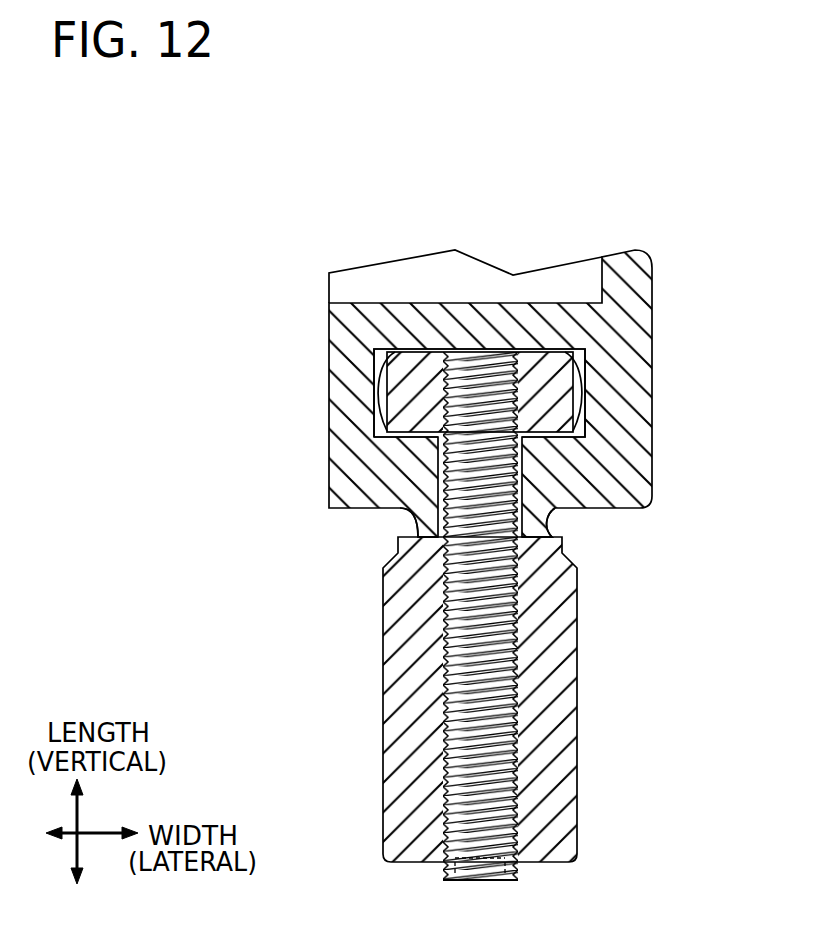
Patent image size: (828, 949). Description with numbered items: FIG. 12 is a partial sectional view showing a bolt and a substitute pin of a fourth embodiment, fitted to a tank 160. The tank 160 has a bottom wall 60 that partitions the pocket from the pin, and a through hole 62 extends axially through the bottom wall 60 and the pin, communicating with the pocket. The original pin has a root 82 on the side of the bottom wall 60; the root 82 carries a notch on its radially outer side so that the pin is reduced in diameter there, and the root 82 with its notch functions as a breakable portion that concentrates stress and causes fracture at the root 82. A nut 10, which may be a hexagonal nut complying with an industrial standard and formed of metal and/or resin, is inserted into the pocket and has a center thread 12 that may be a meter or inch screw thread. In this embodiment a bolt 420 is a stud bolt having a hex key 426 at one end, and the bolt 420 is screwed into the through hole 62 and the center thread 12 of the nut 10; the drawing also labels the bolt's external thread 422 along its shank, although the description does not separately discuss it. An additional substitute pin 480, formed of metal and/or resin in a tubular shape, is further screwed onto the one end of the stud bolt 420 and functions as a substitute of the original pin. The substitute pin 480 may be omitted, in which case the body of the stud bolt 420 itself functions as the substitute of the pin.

The tank 160 is at (686, 174).
The nut 10 is at (567, 337).
The center thread 12 is at (398, 410).
The bottom wall 60 is at (550, 465).
The through hole 62 is at (527, 497).
The root 82 is at (403, 523).
The bolt 420 is at (524, 650).
The thread 422 is at (522, 705).
The hex key 426 is at (493, 883).
The substitute pin 480 is at (577, 778).